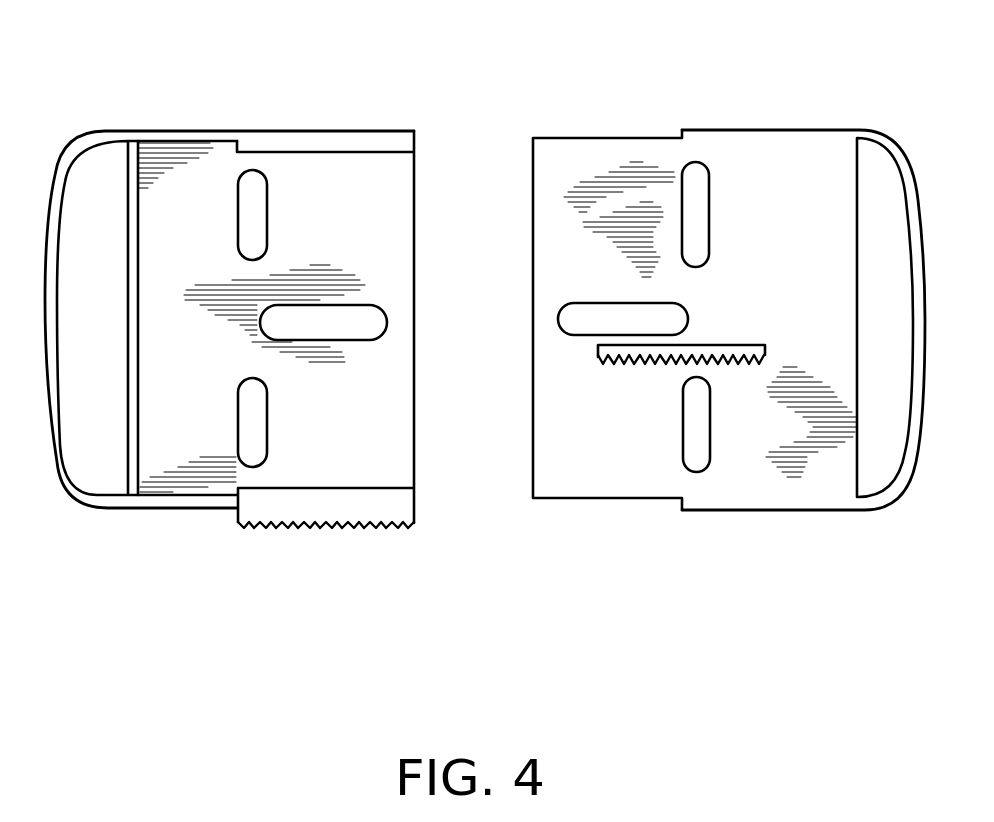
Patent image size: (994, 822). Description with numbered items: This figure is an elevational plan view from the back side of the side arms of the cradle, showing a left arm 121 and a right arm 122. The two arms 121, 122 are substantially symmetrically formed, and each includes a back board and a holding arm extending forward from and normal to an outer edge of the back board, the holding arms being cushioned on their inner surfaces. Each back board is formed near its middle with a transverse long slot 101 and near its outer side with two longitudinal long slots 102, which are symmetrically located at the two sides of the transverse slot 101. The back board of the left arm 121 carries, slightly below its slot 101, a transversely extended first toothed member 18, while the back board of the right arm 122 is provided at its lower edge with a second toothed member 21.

The right arm 122 is at (180, 167).
The left arm 121 is at (781, 153).
The longitudinal long slot 102 is at (252, 182).
The transverse long slot 101 is at (602, 315).
The second toothed member 21 is at (262, 506).
The first toothed member 18 is at (723, 362).